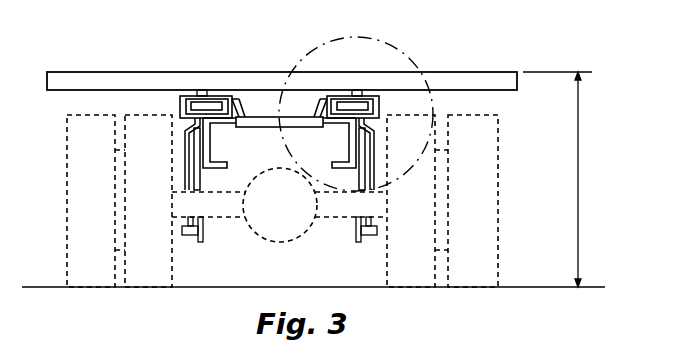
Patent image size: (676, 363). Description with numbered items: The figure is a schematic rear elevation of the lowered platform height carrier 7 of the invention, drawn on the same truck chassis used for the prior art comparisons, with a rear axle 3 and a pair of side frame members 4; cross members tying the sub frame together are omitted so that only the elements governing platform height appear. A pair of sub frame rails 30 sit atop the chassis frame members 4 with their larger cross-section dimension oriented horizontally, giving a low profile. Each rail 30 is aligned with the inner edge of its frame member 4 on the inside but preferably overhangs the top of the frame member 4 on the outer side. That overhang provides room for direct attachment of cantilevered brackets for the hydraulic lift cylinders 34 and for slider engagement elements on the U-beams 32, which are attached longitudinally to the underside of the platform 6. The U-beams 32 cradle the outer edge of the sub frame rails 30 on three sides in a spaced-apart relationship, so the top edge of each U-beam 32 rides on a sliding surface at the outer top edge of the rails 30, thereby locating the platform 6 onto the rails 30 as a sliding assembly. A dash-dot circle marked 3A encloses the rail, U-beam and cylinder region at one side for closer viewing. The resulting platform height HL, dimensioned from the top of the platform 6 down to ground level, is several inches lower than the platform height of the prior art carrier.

The rear axle 3 is at (291, 241).
The detail view circle (FIG. 3A) 3A is at (412, 55).
The side frame members 4 is at (219, 144).
The platform 6 is at (113, 78).
The lowered platform height carrier 7 is at (75, 64).
The sub frame rails 30 is at (200, 96).
The U-beams 32 is at (179, 105).
The hydraulic lift cylinders 34 is at (190, 179).
The platform height HL is at (563, 179).